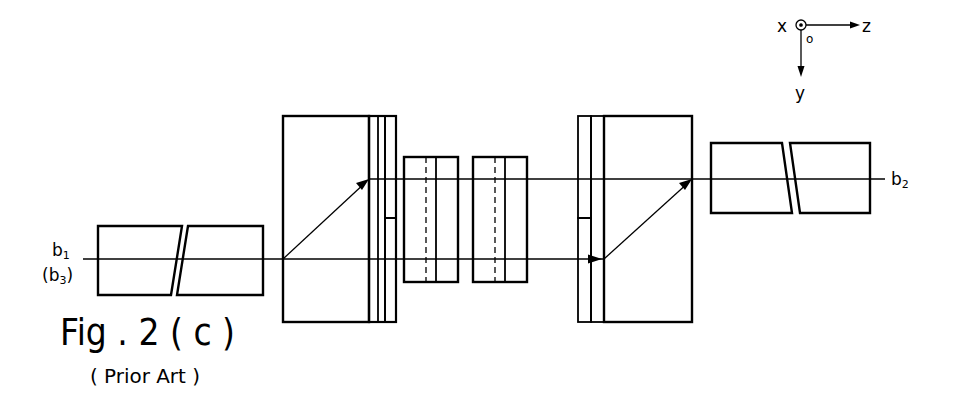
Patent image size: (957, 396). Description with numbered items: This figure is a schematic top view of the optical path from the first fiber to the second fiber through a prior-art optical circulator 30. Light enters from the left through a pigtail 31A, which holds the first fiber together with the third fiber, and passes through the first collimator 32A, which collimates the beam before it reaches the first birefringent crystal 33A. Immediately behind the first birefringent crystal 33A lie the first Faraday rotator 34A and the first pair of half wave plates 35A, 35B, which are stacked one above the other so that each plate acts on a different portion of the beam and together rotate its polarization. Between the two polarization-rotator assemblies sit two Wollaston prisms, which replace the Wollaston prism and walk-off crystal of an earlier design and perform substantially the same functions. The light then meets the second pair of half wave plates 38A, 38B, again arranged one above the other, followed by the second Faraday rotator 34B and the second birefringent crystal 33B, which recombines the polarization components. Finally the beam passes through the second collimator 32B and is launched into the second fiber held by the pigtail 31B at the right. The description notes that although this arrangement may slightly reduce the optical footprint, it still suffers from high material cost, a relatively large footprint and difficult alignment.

The optical circulator 30 is at (106, 128).
The pigtail 31A is at (153, 226).
The first collimator 32A is at (233, 226).
The first birefringent crystal 33A is at (297, 116).
The first Faraday rotator 34A is at (378, 116).
The half wave plate 35A is at (398, 128).
The half wave plate 35B is at (397, 300).
The half wave plate 38A is at (577, 135).
The half wave plate 38B is at (578, 305).
The second Faraday rotator 34B is at (595, 116).
The second birefringent crystal 33B is at (655, 116).
The second collimator 32B is at (732, 143).
The pigtail 31B is at (823, 143).